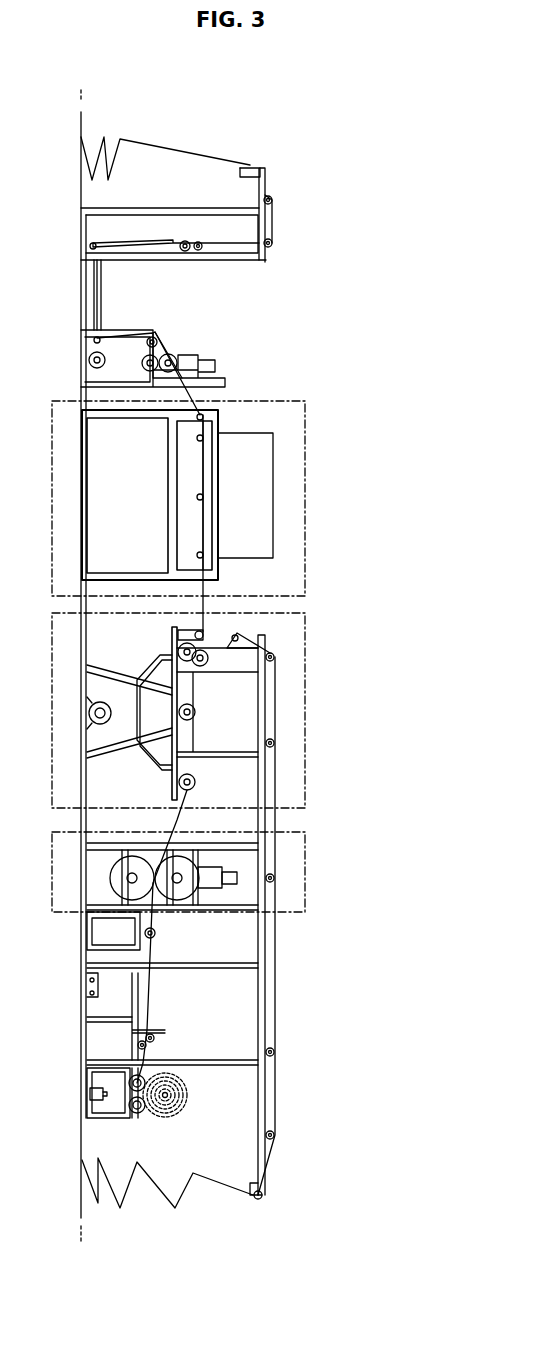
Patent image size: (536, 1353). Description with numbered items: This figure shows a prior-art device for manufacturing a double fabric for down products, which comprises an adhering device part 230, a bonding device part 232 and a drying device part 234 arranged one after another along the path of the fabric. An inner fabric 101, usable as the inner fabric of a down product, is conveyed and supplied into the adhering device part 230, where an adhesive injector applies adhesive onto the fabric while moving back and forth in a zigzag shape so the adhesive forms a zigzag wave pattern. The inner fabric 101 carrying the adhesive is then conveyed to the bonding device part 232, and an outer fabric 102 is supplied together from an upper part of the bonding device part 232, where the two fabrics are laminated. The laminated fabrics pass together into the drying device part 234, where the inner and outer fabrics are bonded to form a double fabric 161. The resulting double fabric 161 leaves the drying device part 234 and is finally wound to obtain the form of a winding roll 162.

The inner fabric 101 is at (177, 152).
The outer fabric 102 is at (187, 1188).
The adhering device part 230 is at (305, 519).
The bonding device part 232 is at (305, 699).
The drying device part 234 is at (305, 860).
The double fabric 161 is at (153, 998).
The winding roll 162 is at (188, 1097).